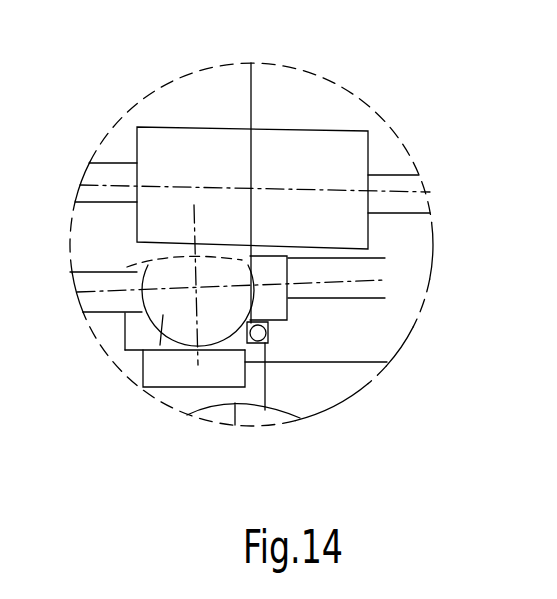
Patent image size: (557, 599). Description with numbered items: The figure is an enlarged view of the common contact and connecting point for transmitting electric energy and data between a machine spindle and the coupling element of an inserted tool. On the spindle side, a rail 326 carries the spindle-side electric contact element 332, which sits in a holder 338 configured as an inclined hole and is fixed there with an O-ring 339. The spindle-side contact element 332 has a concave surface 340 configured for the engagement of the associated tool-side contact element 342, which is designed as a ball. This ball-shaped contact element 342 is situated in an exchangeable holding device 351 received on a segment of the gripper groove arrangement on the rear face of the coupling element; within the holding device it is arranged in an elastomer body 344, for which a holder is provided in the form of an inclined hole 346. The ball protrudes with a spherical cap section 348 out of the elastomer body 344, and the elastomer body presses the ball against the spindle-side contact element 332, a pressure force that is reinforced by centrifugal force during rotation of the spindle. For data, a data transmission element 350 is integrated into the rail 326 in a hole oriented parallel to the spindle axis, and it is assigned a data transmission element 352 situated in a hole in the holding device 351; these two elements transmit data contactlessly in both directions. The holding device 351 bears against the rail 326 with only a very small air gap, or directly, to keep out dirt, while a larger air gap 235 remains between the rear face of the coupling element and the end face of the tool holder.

The air gap 235 is at (233, 400).
The rail 326 is at (360, 318).
The spindle-side electric contact element 332 is at (295, 323).
The holder 338 is at (278, 308).
The O-ring 339 is at (262, 340).
The concave surface 340 is at (246, 320).
The tool-side contact element 342 is at (148, 388).
The elastomer body 344 is at (130, 328).
The inclined hole 346 is at (135, 355).
The spherical cap section 348 is at (285, 256).
The data transmission element 350 is at (305, 150).
The holding device 351 is at (185, 365).
The data transmission element 352 is at (175, 150).